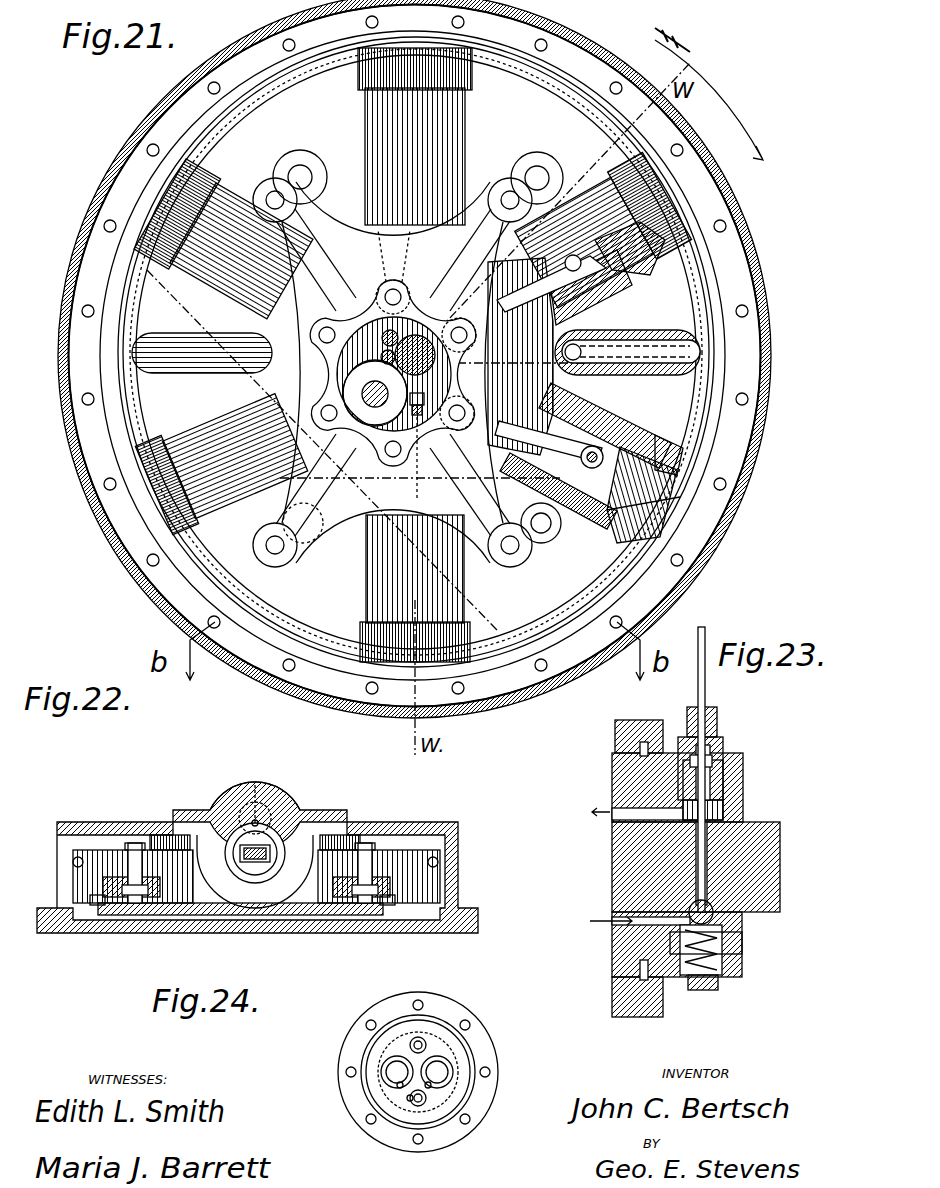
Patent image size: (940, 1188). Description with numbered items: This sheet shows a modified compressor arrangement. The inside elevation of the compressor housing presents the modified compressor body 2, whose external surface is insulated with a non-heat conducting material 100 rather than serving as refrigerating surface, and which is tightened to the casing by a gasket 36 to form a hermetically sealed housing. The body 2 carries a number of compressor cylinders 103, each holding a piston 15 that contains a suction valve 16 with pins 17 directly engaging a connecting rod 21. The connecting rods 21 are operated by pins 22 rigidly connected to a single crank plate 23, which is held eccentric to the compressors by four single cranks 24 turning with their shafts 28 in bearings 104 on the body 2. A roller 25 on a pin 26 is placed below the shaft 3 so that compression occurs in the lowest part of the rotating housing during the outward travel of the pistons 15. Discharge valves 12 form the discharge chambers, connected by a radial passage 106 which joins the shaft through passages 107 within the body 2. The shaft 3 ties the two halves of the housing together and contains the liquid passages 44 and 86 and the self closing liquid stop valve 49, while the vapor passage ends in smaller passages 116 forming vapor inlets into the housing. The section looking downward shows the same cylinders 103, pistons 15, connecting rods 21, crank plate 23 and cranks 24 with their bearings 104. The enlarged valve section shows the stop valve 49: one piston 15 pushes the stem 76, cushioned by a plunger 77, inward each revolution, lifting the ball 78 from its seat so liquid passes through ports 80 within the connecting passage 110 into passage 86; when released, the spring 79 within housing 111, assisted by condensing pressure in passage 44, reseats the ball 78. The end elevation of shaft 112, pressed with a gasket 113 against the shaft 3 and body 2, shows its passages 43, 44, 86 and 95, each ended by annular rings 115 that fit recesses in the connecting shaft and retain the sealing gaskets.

In FIG. 21, the compressor body 2 is at (98, 258).
In FIG. 22, the compressor body 2 is at (187, 843).
In FIG. 23, the compressor body 2 is at (652, 990).
In FIG. 21, the shaft 3 is at (442, 356).
In FIG. 23, the shaft 3 is at (745, 883).
In FIG. 21, the discharge valves 12 is at (680, 482).
In FIG. 21, the pistons 15 is at (680, 440).
In FIG. 22, the pistons 15 is at (283, 817).
In FIG. 21, the suction valves 16 is at (677, 460).
In FIG. 22, the suction valves 16 is at (257, 866).
In FIG. 21, the pins 17 is at (611, 429).
In FIG. 21, the connecting rods 21 is at (400, 217).
In FIG. 22, the connecting rods 21 is at (247, 867).
In FIG. 21, the pins 22 is at (392, 297).
In FIG. 21, the crank plate 23 is at (415, 578).
In FIG. 22, the crank plate 23 is at (257, 913).
In FIG. 21, the cranks 24 is at (522, 160).
In FIG. 22, the cranks 24 is at (153, 887).
In FIG. 21, the roller 25 is at (374, 402).
In FIG. 21, the pin 26 is at (374, 393).
In FIG. 21, the crank shafts 28 is at (535, 190).
In FIG. 22, the crank shafts 28 is at (383, 847).
In FIG. 21, the gasket 36 is at (148, 180).
In FIG. 24, the passage 43 is at (438, 1072).
In FIG. 23, the liquid passage 44 is at (627, 942).
In FIG. 24, the liquid passage 44 is at (420, 1045).
In FIG. 21, the self closing liquid stop valve 49 is at (424, 410).
In FIG. 22, the self closing liquid stop valve 49 is at (267, 822).
In FIG. 23, the self closing liquid stop valve 49 is at (720, 737).
In FIG. 21, the stem 76 is at (418, 487).
In FIG. 22, the stem 76 is at (257, 823).
In FIG. 23, the stem 76 is at (703, 677).
In FIG. 23, the plunger 77 is at (713, 762).
In FIG. 23, the ball 78 is at (713, 923).
In FIG. 23, the spring 79 is at (733, 950).
In FIG. 23, the ports 80 is at (708, 847).
In FIG. 23, the liquid passage 86 is at (657, 813).
In FIG. 24, the liquid passage 86 is at (422, 1103).
In FIG. 24, the passage 95 is at (393, 1070).
In FIG. 21, the non-heat conducting material 100 is at (137, 133).
In FIG. 22, the non-heat conducting material 100 is at (453, 883).
In FIG. 21, the compressor cylinders 103 is at (303, 291).
In FIG. 22, the compressor cylinders 103 is at (287, 870).
In FIG. 22, the bearings 104 is at (120, 860).
In FIG. 21, the radial passage 106 is at (127, 397).
In FIG. 22, the radial passage 106 is at (453, 822).
In FIG. 21, the passages 107 is at (205, 355).
In FIG. 23, the connecting passage 110 is at (705, 848).
In FIG. 23, the housing 111 is at (727, 983).
In FIG. 23, the shaft 112 is at (653, 883).
In FIG. 24, the shaft 112 is at (392, 1045).
In FIG. 23, the gasket 113 is at (627, 757).
In FIG. 24, the annular rings 115 is at (400, 1085).
In FIG. 21, the smaller passages 116 is at (370, 323).